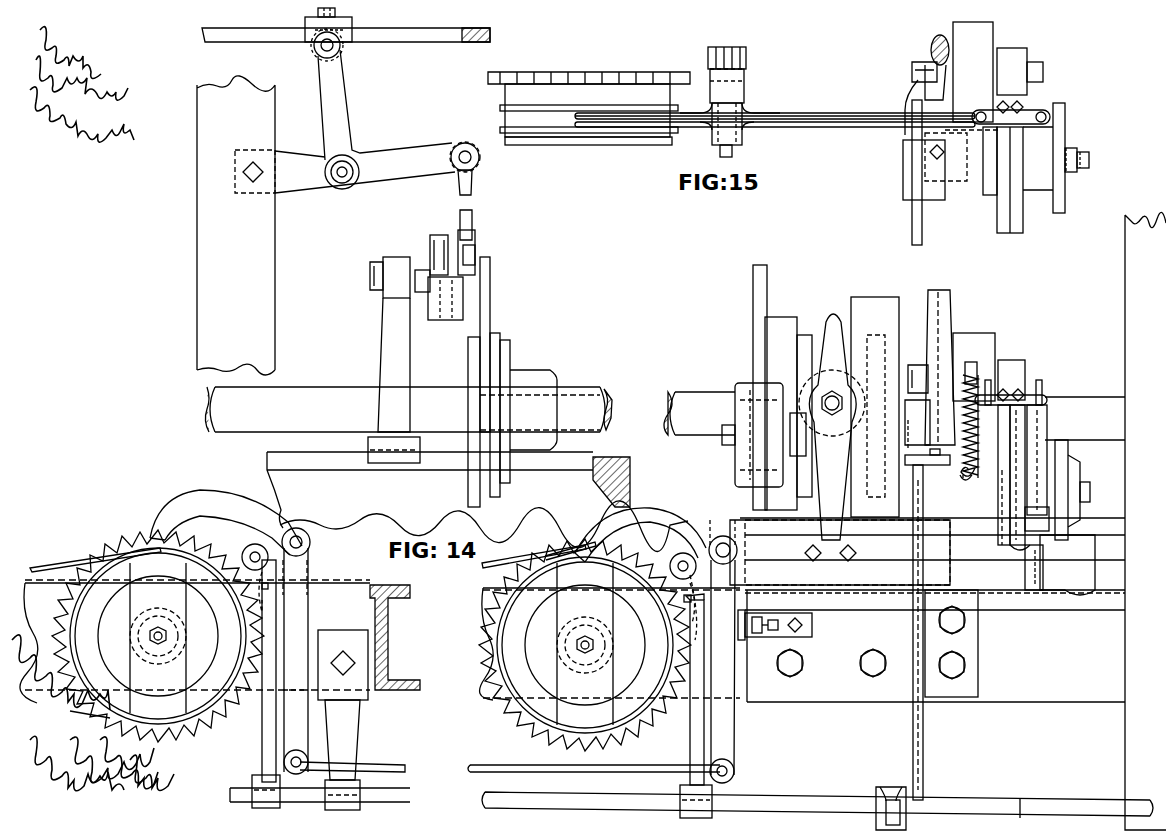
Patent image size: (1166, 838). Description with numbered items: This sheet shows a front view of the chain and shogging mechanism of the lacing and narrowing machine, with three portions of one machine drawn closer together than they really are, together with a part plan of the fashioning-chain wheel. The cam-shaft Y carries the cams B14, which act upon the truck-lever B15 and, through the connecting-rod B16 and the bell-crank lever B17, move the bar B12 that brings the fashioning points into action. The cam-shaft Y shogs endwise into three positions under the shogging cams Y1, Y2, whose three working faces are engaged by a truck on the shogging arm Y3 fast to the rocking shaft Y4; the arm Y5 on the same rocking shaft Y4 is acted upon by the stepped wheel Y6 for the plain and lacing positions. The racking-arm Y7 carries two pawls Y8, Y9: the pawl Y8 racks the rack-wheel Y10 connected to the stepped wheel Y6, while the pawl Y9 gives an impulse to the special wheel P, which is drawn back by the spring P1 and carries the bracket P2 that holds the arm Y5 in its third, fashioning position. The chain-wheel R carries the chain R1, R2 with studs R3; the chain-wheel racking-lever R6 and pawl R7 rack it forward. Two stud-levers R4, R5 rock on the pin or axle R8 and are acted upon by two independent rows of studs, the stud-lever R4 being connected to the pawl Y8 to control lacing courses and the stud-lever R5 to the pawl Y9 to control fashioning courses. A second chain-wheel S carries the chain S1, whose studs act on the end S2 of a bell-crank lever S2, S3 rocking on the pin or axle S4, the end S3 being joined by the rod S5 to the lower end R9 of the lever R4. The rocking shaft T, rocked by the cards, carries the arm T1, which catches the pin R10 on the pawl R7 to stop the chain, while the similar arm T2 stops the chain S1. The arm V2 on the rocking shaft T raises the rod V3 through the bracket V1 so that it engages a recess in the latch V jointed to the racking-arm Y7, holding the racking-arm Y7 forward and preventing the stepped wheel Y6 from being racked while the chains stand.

In FIG. 14, the bar B12 is at (386, 42).
In FIG. 14, the bell-crank lever B17 is at (392, 145).
In FIG. 14, the connecting-rod B16 is at (470, 188).
In FIG. 14, the truck-lever B15 is at (426, 244).
In FIG. 14, the cams B14 is at (484, 382).
In FIG. 14, the cam-shaft Y is at (665, 413).
In FIG. 14, the shogging cam Y1 is at (875, 407).
In FIG. 14, the shogging cam Y2 is at (767, 413).
In FIG. 14, the shogging arm Y3 is at (820, 443).
In FIG. 14, the rocking shaft Y4 is at (1096, 557).
In FIG. 14, the arm Y5 is at (1047, 567).
In FIG. 15, the stepped wheel Y6 is at (1074, 186).
In FIG. 14, the stepped wheel Y6 is at (1070, 470).
In FIG. 15, the racking-arm Y7 is at (930, 50).
In FIG. 14, the racking-arm Y7 is at (930, 370).
In FIG. 15, the pawl Y8 is at (1018, 48).
In FIG. 14, the pawl Y8 is at (1024, 366).
In FIG. 15, the pawl Y9 is at (1003, 48).
In FIG. 14, the pawl Y9 is at (1002, 362).
In FIG. 15, the rack-wheel Y10 is at (1023, 225).
In FIG. 14, the rack-wheel Y10 is at (1031, 444).
In FIG. 15, the special wheel P is at (990, 218).
In FIG. 14, the special wheel P is at (1011, 475).
In FIG. 14, the spring P1 is at (960, 375).
In FIG. 14, the bracket P2 is at (1030, 528).
In FIG. 15, the latch V is at (922, 208).
In FIG. 14, the latch V is at (900, 455).
In FIG. 15, the bracket V1 is at (901, 169).
In FIG. 14, the bracket V1 is at (927, 470).
In FIG. 14, the arm V2 is at (894, 784).
In FIG. 14, the rod V3 is at (928, 745).
In FIG. 15, the chain-wheel R is at (589, 108).
In FIG. 14, the chain-wheel R is at (609, 645).
In FIG. 14, the chain R1 is at (571, 646).
In FIG. 14, the chain R2 is at (490, 568).
In FIG. 14, the studs R3 is at (582, 548).
In FIG. 15, the stud-lever R4 is at (616, 122).
In FIG. 14, the stud-lever R4 is at (640, 535).
In FIG. 15, the stud-lever R5 is at (624, 112).
In FIG. 14, the chain-wheel racking-lever R6 is at (683, 520).
In FIG. 14, the pawl R7 is at (668, 578).
In FIG. 15, the pin or axle R8 is at (740, 152).
In FIG. 14, the pin or axle R8 is at (736, 578).
In FIG. 14, the lower end of lever R9 is at (723, 671).
In FIG. 14, the pin R10 is at (705, 565).
In FIG. 14, the second chain-wheel S is at (197, 636).
In FIG. 14, the chain S1 is at (66, 563).
In FIG. 14, the bell-crank lever end S2 is at (226, 551).
In FIG. 14, the bell-crank lever end S3 is at (295, 661).
In FIG. 14, the pin or axle S4 is at (311, 542).
In FIG. 14, the rod S5 is at (372, 760).
In FIG. 14, the rocking shaft T is at (691, 802).
In FIG. 14, the arm T1 is at (688, 732).
In FIG. 14, the arm T2 is at (262, 742).